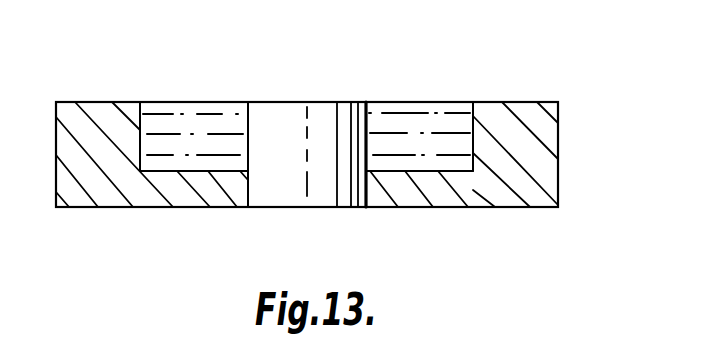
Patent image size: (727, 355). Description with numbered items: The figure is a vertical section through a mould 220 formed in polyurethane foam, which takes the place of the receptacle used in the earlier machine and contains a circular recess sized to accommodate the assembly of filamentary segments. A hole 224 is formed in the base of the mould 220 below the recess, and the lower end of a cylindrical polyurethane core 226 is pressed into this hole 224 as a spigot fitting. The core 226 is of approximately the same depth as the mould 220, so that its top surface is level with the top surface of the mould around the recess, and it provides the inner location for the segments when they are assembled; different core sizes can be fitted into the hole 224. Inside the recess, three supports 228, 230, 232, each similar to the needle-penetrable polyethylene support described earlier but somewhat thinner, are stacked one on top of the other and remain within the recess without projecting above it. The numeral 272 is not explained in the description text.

The mould 220 is at (541, 167).
The hole 224 is at (237, 208).
The core 226 is at (330, 110).
The support 228 is at (160, 155).
The support 230 is at (193, 133).
The support 232 is at (230, 113).
The second recess 272 is at (477, 117).